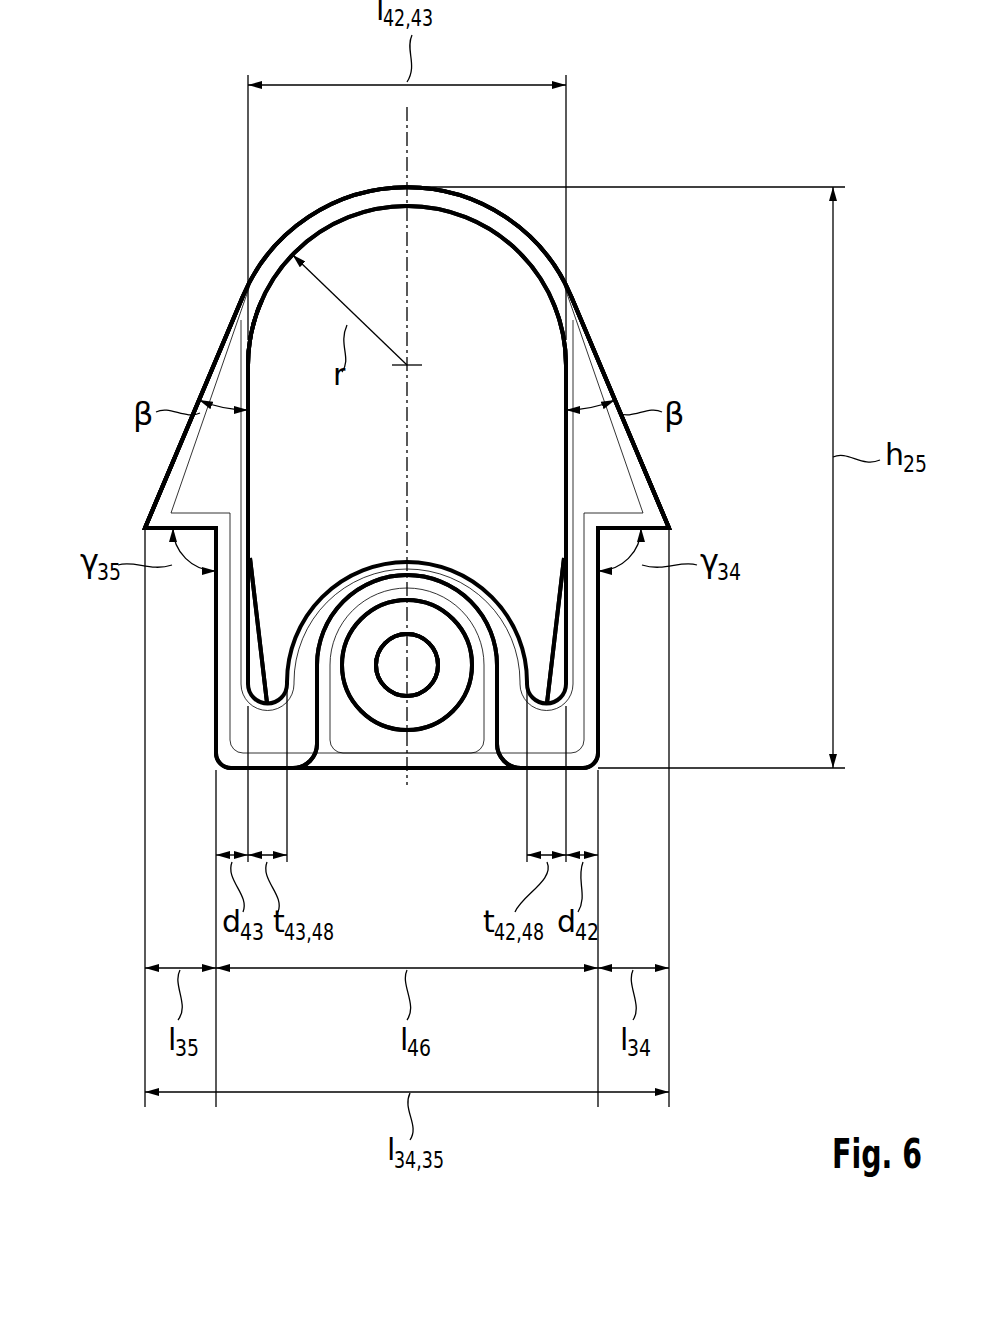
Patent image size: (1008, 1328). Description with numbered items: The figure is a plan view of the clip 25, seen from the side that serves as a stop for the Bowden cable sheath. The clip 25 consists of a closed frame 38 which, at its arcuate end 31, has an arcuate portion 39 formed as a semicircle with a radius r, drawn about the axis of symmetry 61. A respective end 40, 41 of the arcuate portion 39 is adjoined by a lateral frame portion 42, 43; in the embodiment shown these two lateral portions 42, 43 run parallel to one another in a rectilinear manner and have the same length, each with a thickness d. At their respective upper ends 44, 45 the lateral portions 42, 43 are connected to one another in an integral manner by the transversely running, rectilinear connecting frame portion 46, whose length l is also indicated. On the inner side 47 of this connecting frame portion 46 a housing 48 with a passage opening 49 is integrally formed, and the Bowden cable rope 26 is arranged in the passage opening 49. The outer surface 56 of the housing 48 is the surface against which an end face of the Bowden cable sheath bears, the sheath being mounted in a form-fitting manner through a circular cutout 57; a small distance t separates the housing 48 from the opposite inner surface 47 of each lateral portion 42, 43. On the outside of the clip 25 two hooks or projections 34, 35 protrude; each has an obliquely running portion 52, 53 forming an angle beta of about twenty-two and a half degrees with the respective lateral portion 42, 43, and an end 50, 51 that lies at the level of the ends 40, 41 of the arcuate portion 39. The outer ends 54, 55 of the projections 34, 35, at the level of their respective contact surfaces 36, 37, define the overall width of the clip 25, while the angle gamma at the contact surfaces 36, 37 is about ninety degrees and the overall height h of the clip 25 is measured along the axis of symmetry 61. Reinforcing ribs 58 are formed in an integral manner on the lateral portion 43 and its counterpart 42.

The clip 25 is at (377, 181).
The arcuate end 31 is at (407, 241).
The closed frame 38 is at (312, 213).
The arcuate portion 39 is at (248, 355).
The inner side 47 is at (458, 216).
The projection 35 is at (238, 311).
The end of projection 50 is at (194, 412).
The projection 34 is at (577, 311).
The end of projection 51 is at (620, 412).
The end of arcuate portion 41 is at (255, 360).
The end of arcuate portion 40 is at (566, 355).
The obliquely running portion 53 is at (204, 388).
The obliquely running portion 52 is at (610, 388).
The end of projection 55 is at (143, 527).
The contact surface 37 is at (148, 537).
The end of projection 54 is at (671, 527).
The contact surface 36 is at (668, 537).
The lateral frame portion 43 is at (252, 456).
The lateral frame portion 42 is at (564, 456).
The upper end of lateral portion 45 is at (250, 674).
The upper end of lateral portion 44 is at (564, 674).
The transversely running connecting frame portion 46 is at (313, 770).
The reinforcing rib 58 is at (256, 645).
The housing 48 is at (407, 665).
The outer surface of housing 56 is at (377, 740).
The circular cutout 57 is at (457, 667).
The passage opening 49 is at (433, 667).
The Bowden cable rope 26 is at (407, 665).
The axis of symmetry 61 is at (410, 120).